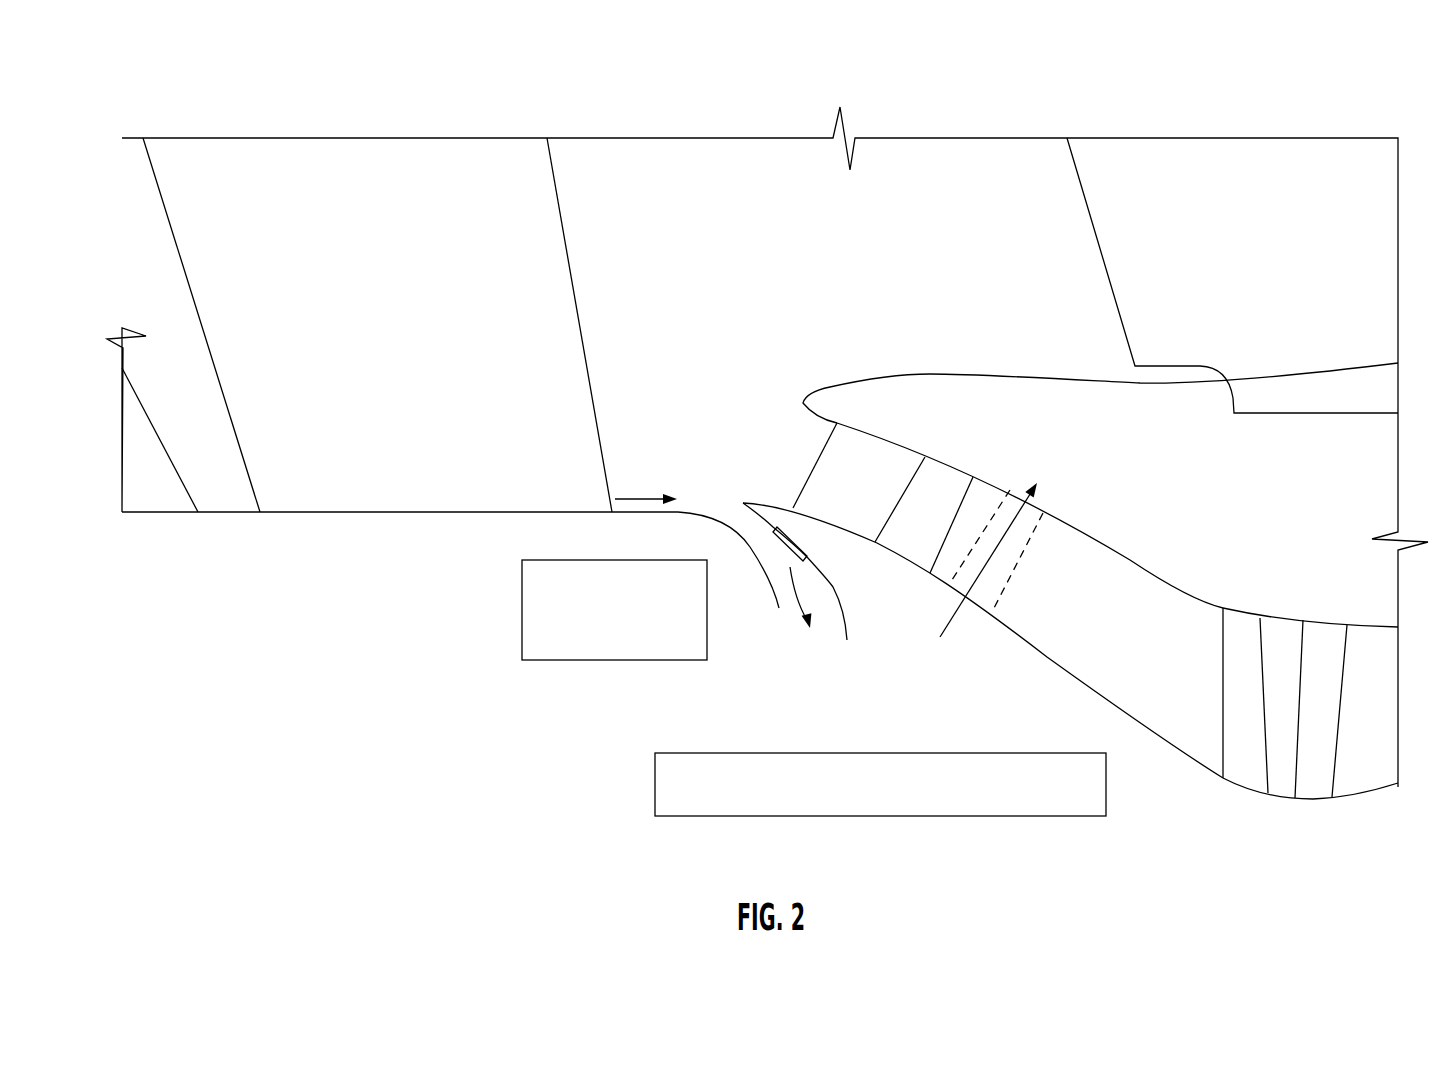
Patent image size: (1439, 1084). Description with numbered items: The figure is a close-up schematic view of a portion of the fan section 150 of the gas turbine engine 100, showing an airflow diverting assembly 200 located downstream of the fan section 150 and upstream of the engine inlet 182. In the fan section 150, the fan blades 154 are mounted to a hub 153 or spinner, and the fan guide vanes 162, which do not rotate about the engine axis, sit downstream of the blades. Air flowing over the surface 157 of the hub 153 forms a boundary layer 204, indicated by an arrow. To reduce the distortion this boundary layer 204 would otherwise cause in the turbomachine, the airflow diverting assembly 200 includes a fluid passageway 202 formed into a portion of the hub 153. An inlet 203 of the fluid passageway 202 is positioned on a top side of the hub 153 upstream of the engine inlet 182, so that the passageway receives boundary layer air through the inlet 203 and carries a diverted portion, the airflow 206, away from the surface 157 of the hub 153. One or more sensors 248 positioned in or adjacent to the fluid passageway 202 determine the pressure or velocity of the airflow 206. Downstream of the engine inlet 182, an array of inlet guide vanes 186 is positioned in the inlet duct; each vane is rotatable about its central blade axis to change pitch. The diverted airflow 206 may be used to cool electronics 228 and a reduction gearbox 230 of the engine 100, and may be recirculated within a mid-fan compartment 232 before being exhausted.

The engine 100 is at (103, 208).
The fan section 150 is at (132, 445).
The hub 153 is at (485, 504).
The fan blades 154 is at (387, 284).
The surface 157 is at (418, 543).
The fan guide vanes 162 is at (1302, 244).
The engine inlet 182 is at (755, 458).
The inlet guide vanes 186 is at (858, 463).
The airflow diverting assembly 200 is at (697, 480).
The fluid passageway 202 is at (760, 537).
The inlet 203 is at (720, 505).
The boundary layer 204 is at (638, 498).
The airflow 206 is at (805, 597).
The electronics 228 is at (551, 660).
The reduction gearbox 230 is at (700, 816).
The mid-fan compartment 232 is at (980, 403).
The sensors 248 is at (828, 569).